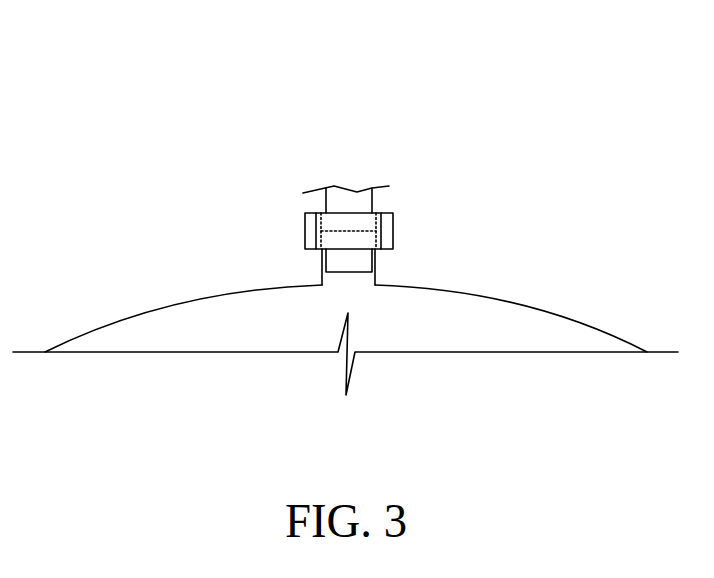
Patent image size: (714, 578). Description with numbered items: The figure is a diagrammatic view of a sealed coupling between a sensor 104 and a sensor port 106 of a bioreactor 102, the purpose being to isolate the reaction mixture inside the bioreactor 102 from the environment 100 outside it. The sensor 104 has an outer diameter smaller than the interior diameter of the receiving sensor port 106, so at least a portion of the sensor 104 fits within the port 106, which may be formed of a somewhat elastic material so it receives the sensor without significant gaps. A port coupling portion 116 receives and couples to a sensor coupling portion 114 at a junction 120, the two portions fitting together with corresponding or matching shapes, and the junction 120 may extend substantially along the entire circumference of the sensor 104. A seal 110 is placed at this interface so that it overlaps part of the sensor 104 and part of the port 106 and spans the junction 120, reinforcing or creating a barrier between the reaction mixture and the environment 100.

The environment 100 is at (400, 112).
The bioreactor 102 is at (515, 319).
The sensor 104 is at (376, 202).
The sensor port 106 is at (377, 284).
The seal 110 is at (393, 229).
The sensor coupling portion 114 is at (332, 221).
The port coupling portion 116 is at (334, 238).
The junction 120 is at (353, 231).